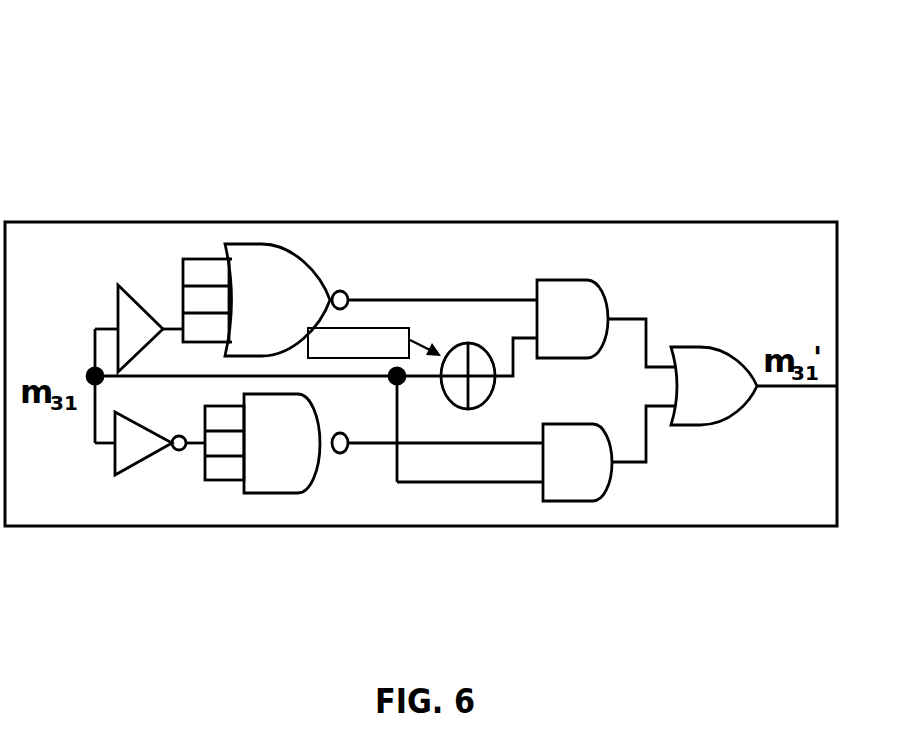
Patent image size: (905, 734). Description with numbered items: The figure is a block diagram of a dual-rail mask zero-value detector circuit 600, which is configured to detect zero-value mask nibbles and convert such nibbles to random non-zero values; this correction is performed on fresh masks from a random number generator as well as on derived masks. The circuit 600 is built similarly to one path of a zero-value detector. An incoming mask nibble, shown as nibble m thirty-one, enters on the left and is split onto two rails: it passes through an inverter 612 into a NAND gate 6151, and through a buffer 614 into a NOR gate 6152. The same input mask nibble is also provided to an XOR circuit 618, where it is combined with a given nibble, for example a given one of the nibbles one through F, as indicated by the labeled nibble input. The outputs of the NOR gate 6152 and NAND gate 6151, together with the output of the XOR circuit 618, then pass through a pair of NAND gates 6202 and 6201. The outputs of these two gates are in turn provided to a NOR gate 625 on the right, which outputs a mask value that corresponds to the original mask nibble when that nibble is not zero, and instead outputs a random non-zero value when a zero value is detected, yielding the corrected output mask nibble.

The dual-rail mask ZVD circuit 600 is at (136, 60).
The inverter 612 is at (127, 476).
The buffer 614 is at (118, 297).
The NAND gate 6151 is at (293, 495).
The NOR gate 6152 is at (295, 245).
The XOR circuit 618 is at (480, 340).
The NAND gate 6201 is at (567, 502).
The NAND gate 6202 is at (575, 280).
The NOR gate 625 is at (692, 426).